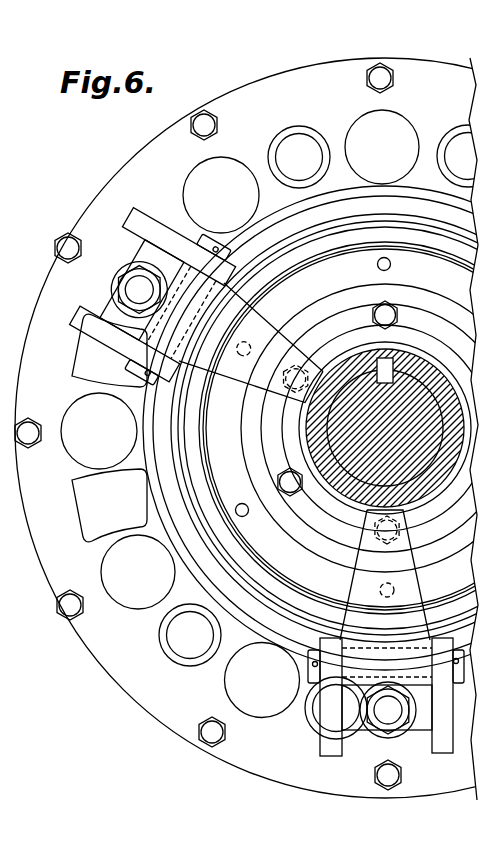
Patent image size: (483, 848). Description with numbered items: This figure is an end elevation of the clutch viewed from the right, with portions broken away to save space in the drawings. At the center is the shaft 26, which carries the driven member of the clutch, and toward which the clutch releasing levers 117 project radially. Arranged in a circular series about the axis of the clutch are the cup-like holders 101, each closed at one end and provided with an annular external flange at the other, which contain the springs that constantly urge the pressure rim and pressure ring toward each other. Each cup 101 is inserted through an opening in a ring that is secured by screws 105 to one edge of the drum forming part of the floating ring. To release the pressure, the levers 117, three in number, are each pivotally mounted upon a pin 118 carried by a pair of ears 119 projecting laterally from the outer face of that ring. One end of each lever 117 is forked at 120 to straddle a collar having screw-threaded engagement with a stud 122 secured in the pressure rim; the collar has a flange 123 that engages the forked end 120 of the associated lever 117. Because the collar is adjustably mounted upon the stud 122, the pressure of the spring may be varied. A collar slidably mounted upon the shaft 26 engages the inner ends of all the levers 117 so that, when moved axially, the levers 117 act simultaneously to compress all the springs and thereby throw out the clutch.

The shaft 26 is at (362, 382).
The cup-like holder 101 is at (200, 173).
The screws 105 is at (203, 125).
The clutch releasing lever 117 is at (226, 357).
The pin 118 is at (205, 238).
The ears 119 is at (133, 219).
The forked end 120 is at (150, 320).
The stud 122 is at (130, 283).
The flange 123 is at (112, 284).